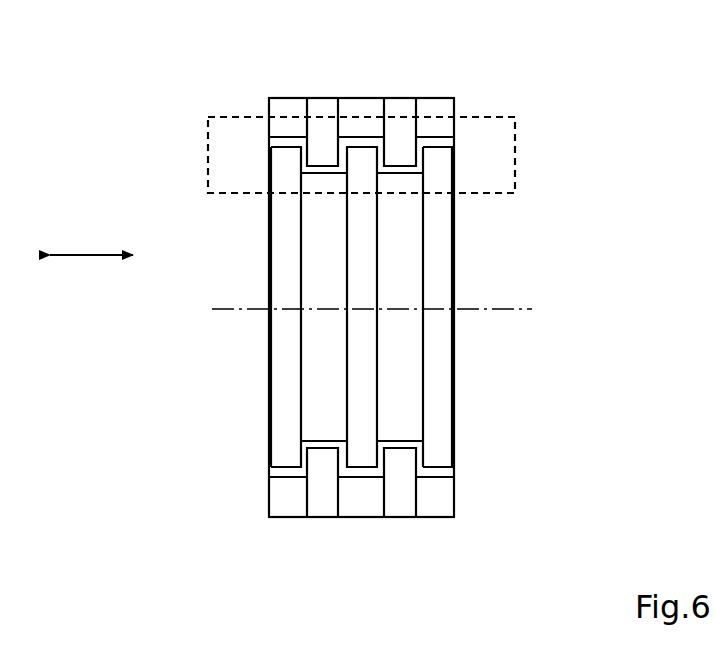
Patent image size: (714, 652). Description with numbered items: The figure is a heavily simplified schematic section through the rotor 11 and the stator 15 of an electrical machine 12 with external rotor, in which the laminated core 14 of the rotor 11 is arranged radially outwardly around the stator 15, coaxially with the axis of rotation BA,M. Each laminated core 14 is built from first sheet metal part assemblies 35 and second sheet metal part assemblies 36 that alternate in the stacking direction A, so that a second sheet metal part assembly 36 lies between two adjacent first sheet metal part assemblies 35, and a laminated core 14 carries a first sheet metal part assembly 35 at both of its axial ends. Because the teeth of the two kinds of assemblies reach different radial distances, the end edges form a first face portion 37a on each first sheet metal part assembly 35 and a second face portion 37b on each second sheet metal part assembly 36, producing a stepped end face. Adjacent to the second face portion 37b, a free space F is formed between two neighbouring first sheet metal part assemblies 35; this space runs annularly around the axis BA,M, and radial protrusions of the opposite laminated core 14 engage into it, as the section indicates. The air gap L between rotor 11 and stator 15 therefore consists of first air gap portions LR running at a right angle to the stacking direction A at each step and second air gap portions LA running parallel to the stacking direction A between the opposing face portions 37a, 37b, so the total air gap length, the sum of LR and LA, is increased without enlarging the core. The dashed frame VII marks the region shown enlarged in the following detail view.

The electrical machine 12 is at (588, 58).
The rotor 11 is at (460, 103).
The first sheet metal part assembly 35 is at (313, 105).
The second sheet metal part assembly 36 is at (288, 105).
The first face portion 37a is at (318, 168).
The second face portion 37b is at (284, 143).
The free space F is at (378, 142).
The air gap L is at (460, 142).
The detail region VII is at (515, 160).
The axis of rotation BA,M is at (497, 310).
The stacking direction A is at (85, 255).
The stator 15 is at (237, 368).
The second air gap portion LA is at (445, 473).
The first air gap portion LR is at (345, 455).
The laminated core 14 is at (360, 517).